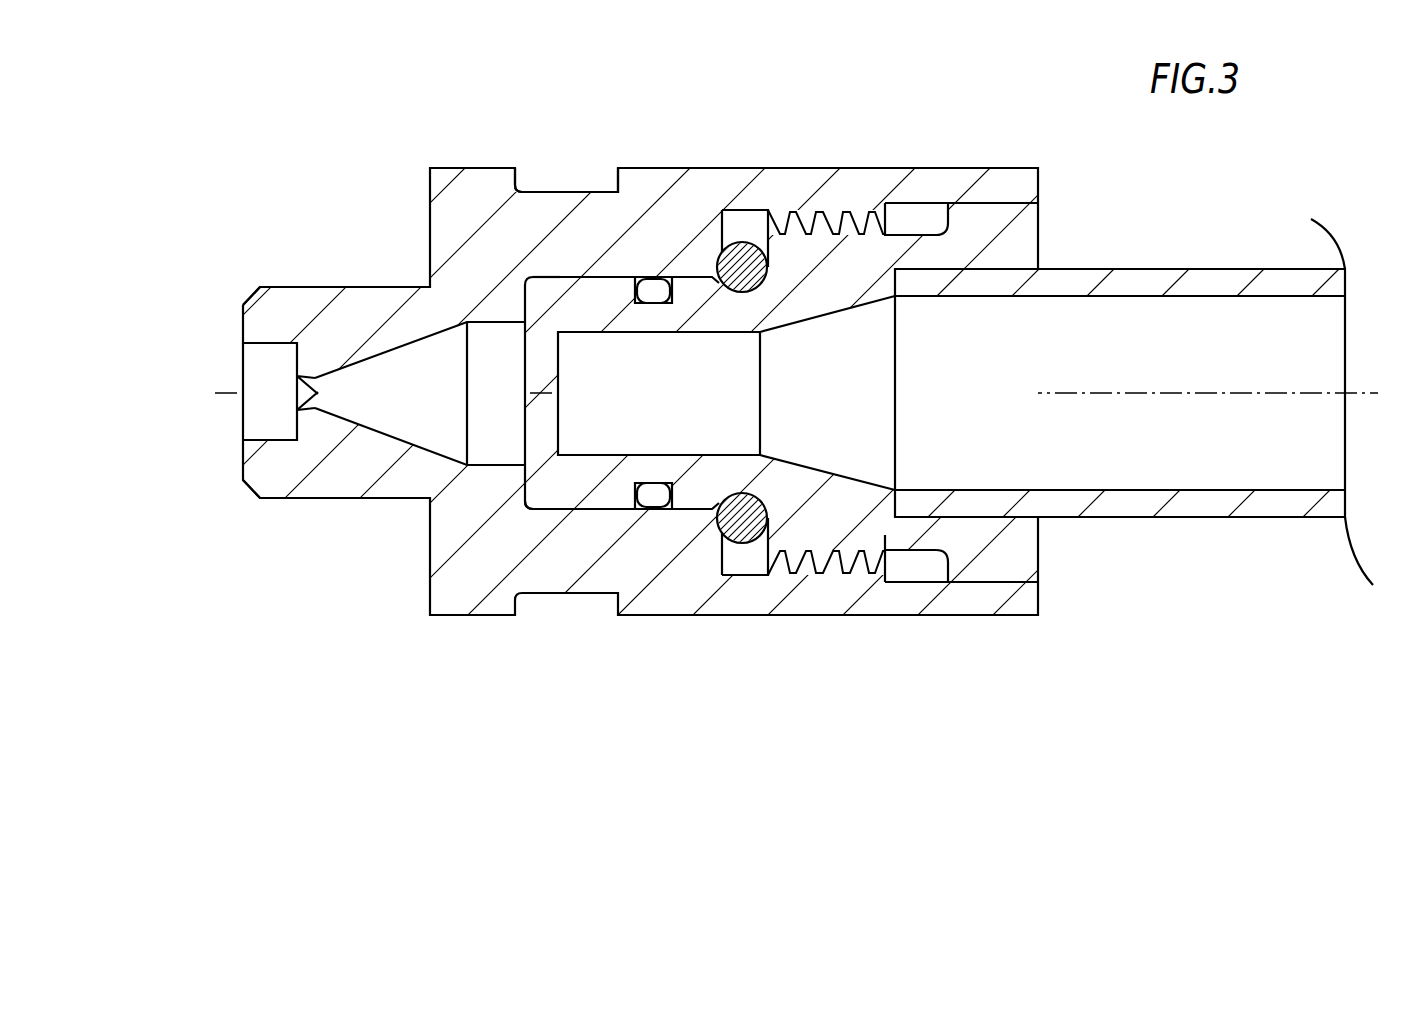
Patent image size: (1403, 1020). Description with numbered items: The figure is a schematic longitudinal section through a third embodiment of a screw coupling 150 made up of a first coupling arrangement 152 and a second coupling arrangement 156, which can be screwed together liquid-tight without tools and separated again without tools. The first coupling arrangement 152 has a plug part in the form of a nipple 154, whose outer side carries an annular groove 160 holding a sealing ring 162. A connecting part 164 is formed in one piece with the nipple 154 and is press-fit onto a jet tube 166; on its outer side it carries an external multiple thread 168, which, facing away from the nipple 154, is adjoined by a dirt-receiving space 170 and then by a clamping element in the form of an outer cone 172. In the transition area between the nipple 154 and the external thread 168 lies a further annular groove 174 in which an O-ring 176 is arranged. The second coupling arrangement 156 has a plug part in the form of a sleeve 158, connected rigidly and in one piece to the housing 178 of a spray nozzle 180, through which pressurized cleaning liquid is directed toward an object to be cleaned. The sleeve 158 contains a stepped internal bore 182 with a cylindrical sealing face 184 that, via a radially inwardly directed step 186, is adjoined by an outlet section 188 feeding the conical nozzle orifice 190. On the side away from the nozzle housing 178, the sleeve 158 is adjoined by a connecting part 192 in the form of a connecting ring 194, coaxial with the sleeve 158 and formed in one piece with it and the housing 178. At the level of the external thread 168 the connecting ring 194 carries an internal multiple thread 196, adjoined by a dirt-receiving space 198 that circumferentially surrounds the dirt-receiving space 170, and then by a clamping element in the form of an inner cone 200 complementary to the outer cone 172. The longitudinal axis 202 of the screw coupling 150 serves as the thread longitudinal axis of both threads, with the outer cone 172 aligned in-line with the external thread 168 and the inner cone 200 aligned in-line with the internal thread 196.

The screw coupling 150 is at (820, 128).
The first coupling arrangement 152 is at (1048, 229).
The nipple 154 is at (578, 486).
The second coupling arrangement 156 is at (565, 178).
The sleeve 158 is at (635, 256).
The annular groove 160 is at (648, 492).
The sealing ring 162 is at (672, 488).
The connecting part 164 is at (892, 548).
The jet tube 166 is at (1212, 506).
The external multiple thread 168 is at (825, 574).
The dirt-receiving space 170 is at (925, 554).
The outer cone 172 is at (1012, 585).
The further annular groove 174 is at (743, 520).
The O-ring 176 is at (757, 572).
The housing 178 is at (301, 276).
The spray nozzle 180 is at (373, 256).
The stepped internal bore 182 is at (540, 288).
The cylindrical sealing face 184 is at (588, 290).
The step 186 is at (533, 484).
The outlet section 188 is at (466, 450).
The conical nozzle orifice 190 is at (363, 420).
The connecting part 192 is at (758, 178).
The connecting ring 194 is at (795, 190).
The internal multiple thread 196 is at (840, 240).
The dirt-receiving space 198 is at (915, 222).
The inner cone 200 is at (980, 222).
The longitudinal axis 202 is at (266, 390).